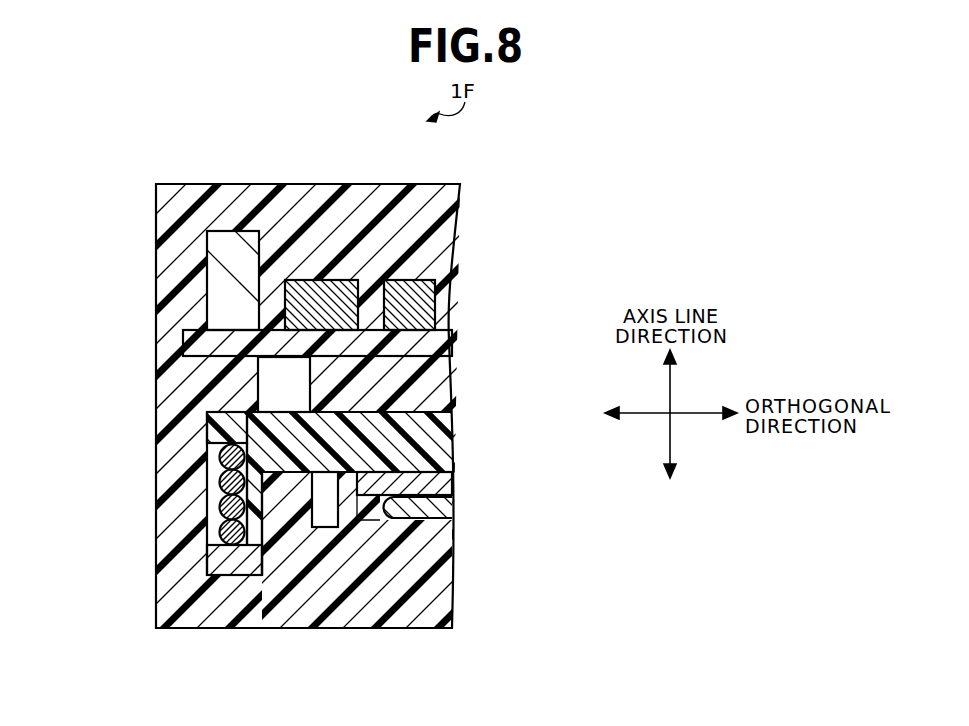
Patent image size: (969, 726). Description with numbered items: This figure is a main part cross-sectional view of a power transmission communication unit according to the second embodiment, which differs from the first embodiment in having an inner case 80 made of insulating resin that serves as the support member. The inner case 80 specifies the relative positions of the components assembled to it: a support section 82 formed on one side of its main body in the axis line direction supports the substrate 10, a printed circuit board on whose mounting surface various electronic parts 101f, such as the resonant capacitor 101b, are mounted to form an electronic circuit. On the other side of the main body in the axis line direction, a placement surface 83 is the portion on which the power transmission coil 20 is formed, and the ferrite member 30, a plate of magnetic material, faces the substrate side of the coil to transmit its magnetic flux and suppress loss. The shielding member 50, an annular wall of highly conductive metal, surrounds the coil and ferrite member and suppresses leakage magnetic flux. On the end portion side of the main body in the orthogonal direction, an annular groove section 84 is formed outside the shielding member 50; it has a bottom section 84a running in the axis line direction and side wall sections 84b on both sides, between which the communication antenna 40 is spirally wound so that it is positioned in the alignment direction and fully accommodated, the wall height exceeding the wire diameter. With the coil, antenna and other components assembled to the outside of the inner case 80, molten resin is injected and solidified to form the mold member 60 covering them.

The mold member 60 is at (446, 212).
The electronic parts 101f is at (385, 383).
The resonant capacitor 101b is at (410, 280).
The substrate 10 is at (385, 332).
The inner case 80 is at (339, 405).
The support section 82 is at (222, 405).
The groove section 84 is at (212, 488).
The bottom section 84a is at (230, 494).
The side wall sections 84b is at (213, 458).
The placement surface 83 is at (287, 475).
The communication antenna 40 is at (282, 607).
The shielding member 50 is at (480, 421).
The power transmission coil 20 is at (316, 405).
The ferrite member 30 is at (370, 498).